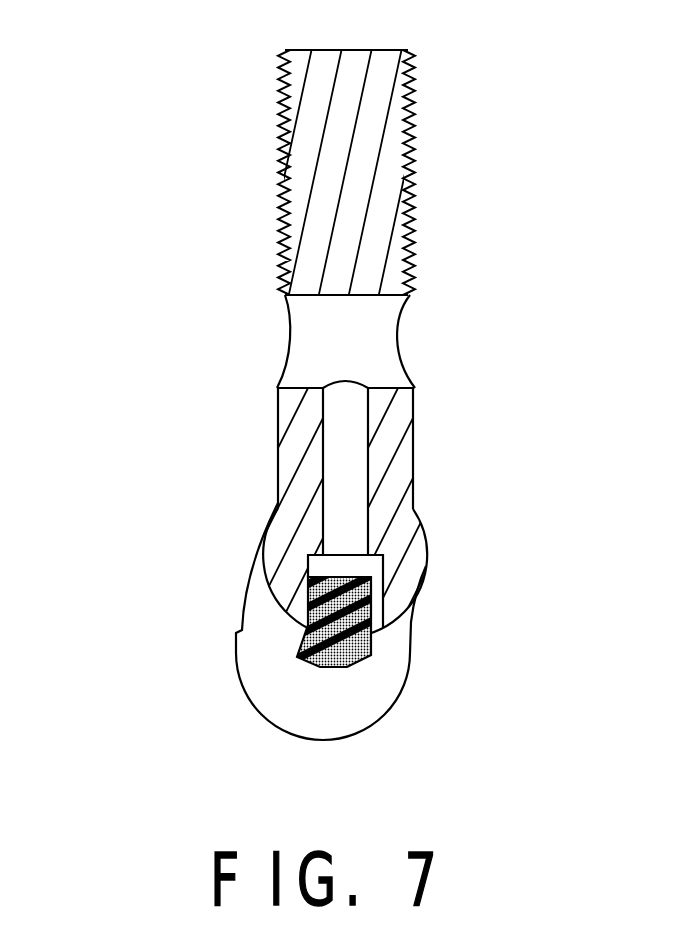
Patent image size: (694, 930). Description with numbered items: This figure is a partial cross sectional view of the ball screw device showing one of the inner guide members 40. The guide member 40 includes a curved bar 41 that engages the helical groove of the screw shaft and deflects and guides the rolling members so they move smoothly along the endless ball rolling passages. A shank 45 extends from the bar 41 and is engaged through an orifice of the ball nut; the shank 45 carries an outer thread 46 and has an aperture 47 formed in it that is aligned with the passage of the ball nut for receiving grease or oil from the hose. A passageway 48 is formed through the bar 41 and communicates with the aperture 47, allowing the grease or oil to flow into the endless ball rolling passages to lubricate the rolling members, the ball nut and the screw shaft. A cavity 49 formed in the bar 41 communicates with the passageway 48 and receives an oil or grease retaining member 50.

The inner guide member 40 is at (253, 158).
The bar 41 is at (282, 532).
The shank 45 is at (415, 423).
The outer thread 46 is at (415, 130).
The aperture 47 is at (400, 340).
The passageway 48 is at (345, 493).
The cavity 49 is at (382, 590).
The oil or grease retaining member 50 is at (373, 642).